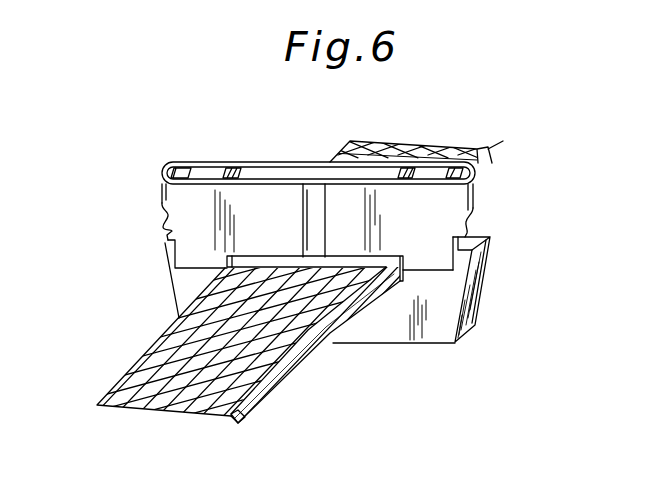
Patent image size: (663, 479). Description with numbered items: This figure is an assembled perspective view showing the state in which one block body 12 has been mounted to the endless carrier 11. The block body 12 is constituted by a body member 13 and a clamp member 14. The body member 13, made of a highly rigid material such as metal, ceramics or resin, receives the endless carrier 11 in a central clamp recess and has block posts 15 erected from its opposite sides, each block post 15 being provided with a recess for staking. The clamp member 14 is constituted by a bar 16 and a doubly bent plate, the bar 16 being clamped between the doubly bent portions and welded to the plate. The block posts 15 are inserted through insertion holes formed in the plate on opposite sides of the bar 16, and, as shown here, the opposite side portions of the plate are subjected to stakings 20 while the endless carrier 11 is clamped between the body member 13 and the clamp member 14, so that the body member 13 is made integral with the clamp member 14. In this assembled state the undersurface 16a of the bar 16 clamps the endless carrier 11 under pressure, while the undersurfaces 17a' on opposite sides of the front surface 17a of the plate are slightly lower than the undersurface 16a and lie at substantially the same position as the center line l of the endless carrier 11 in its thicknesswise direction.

The endless carrier 11 is at (298, 360).
The block body 12 is at (497, 268).
The body member 13 is at (400, 330).
The clamp member 14 is at (243, 156).
The block post 15 is at (203, 173).
The bar 16 is at (317, 190).
The undersurface of the bar 16a is at (349, 298).
The front surface of the plate 17a is at (317, 214).
The undersurface of the plate 17a' is at (314, 289).
The staking 20 is at (168, 221).
The center line of the endless carrier l is at (238, 423).